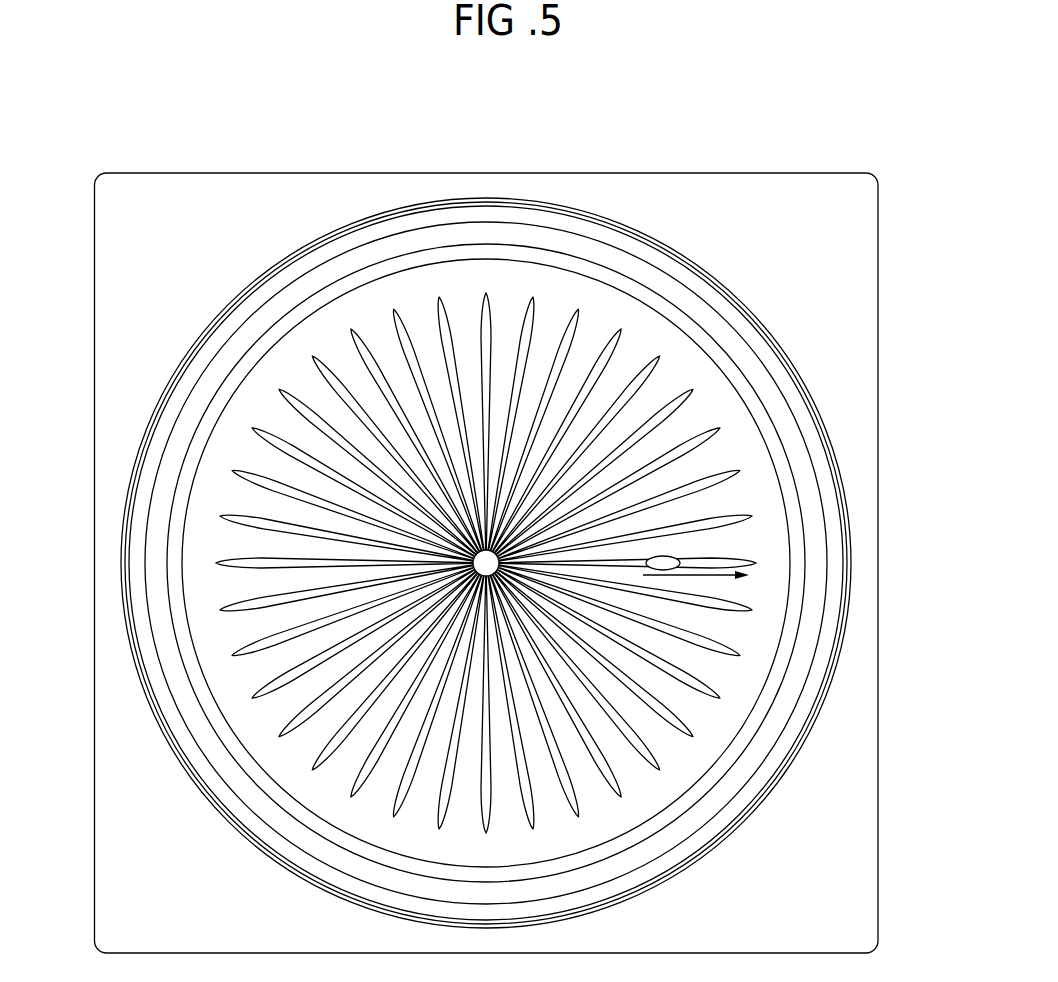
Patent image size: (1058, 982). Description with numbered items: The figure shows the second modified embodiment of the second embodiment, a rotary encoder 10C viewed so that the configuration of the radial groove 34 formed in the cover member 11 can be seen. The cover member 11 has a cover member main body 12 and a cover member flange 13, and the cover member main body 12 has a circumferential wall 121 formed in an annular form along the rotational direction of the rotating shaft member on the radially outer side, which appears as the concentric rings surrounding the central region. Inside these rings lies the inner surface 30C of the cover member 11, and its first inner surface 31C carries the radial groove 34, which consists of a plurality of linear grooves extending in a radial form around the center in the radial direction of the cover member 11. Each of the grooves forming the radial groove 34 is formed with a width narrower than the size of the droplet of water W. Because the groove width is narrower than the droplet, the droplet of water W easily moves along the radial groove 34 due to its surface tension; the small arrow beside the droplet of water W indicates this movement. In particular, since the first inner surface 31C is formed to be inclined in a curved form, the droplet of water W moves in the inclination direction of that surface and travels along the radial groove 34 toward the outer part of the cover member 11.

The rotary encoder 10C is at (812, 163).
The cover member 11 is at (542, 563).
The cover member main body 12 is at (833, 680).
The cover member flange 13 is at (917, 683).
The circumferential wall 121 is at (838, 468).
The first inner surface 31C is at (486, 497).
The inner surface 30C is at (477, 272).
The radial groove 34 is at (233, 472).
The droplet of water W is at (675, 556).